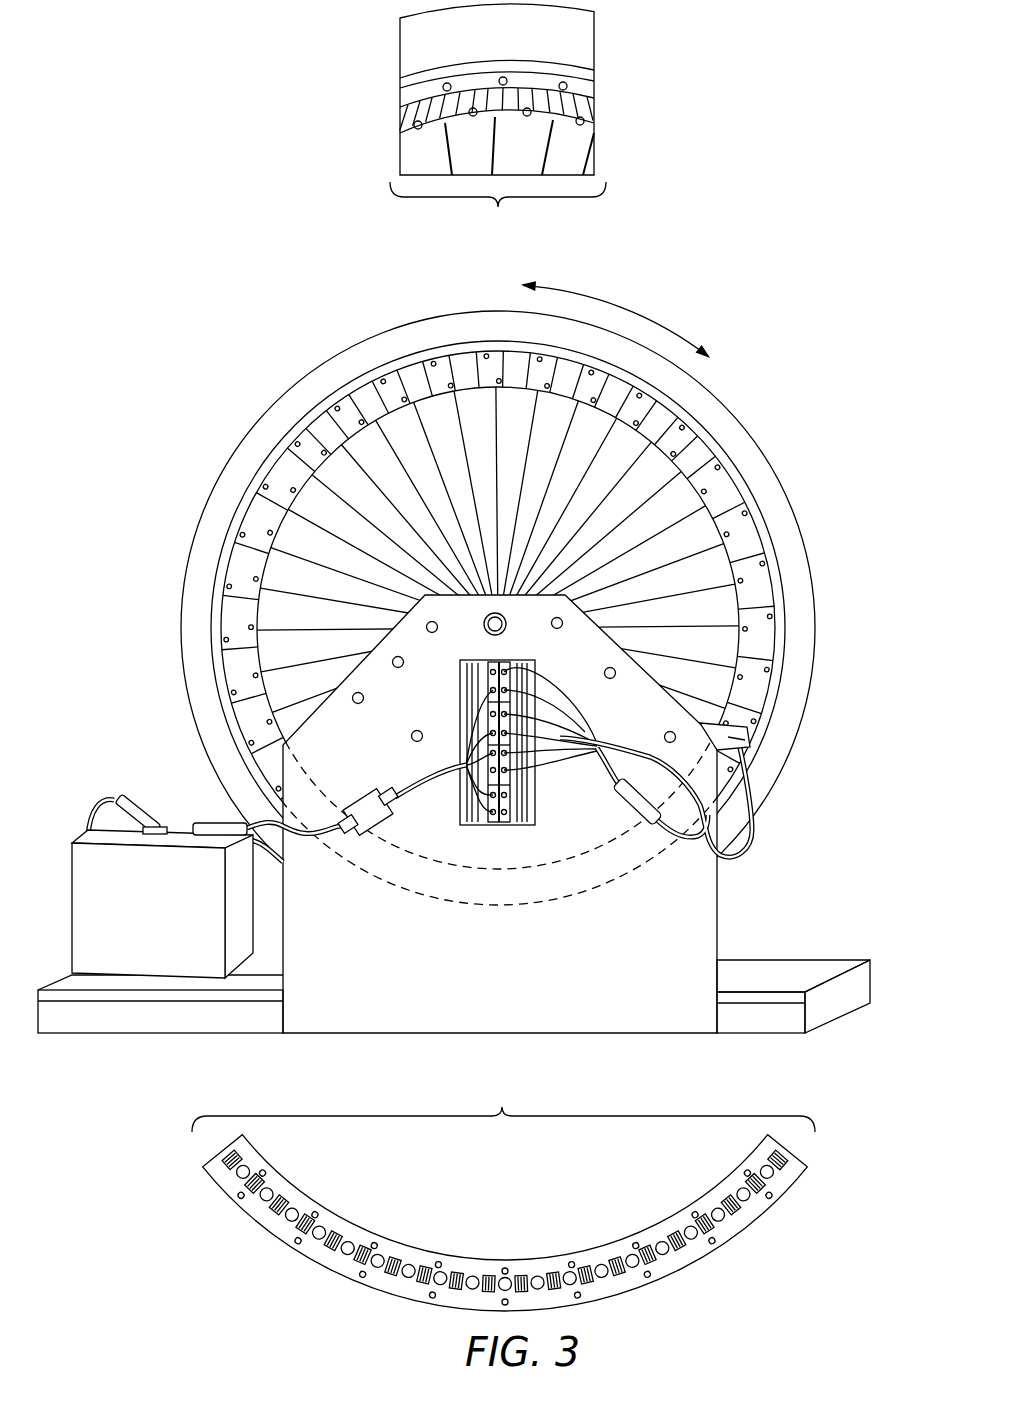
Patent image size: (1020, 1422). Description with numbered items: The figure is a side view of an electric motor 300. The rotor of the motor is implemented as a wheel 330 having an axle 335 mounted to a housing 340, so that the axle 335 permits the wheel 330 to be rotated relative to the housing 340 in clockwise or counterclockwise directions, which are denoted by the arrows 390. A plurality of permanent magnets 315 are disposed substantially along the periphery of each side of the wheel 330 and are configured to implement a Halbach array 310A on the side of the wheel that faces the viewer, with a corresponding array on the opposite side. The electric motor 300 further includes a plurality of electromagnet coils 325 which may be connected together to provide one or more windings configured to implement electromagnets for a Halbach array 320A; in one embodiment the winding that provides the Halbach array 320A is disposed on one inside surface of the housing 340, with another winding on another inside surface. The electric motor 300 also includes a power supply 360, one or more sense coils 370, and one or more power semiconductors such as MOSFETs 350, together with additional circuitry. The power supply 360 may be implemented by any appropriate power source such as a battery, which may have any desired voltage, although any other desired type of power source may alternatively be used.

The electric motor 300 is at (468, 598).
The Halbach array 310A is at (598, 97).
The permanent magnets 315 is at (530, 153).
The Halbach array 320A is at (785, 1228).
The electromagnet coils 325 is at (500, 912).
The wheel 330 is at (733, 397).
The axle 335 is at (508, 625).
The housing 340 is at (680, 937).
The MOSFETs 350 is at (447, 832).
The power supply 360 is at (168, 923).
The sense coils 370 is at (757, 742).
The arrows 390 is at (622, 305).